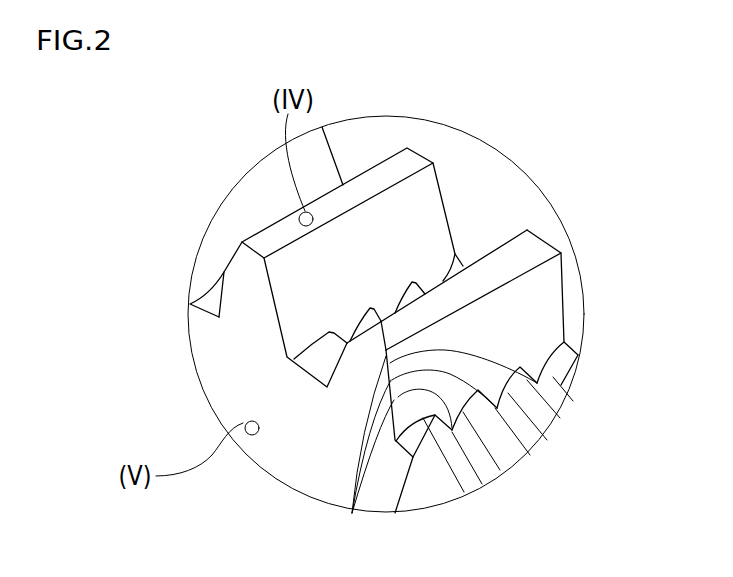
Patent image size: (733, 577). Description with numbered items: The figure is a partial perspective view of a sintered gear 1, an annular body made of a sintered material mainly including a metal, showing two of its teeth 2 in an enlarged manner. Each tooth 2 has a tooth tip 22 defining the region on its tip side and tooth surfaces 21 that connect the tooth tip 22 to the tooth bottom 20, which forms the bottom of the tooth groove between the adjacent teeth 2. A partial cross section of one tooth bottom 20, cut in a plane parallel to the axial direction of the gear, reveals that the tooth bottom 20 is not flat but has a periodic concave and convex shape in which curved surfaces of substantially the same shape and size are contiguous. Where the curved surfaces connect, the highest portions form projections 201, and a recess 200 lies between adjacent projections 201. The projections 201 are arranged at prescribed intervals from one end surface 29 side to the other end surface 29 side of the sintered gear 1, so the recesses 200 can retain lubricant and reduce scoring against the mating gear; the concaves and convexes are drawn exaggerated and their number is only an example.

The sintered gear 1 is at (161, 237).
The tooth 2 is at (428, 296).
The tooth bottom 20 is at (480, 330).
The tooth surface 21 is at (430, 214).
The tooth tip 22 is at (372, 186).
The end surface 29 is at (237, 383).
The recess 200 is at (572, 373).
The projection 201 is at (352, 513).